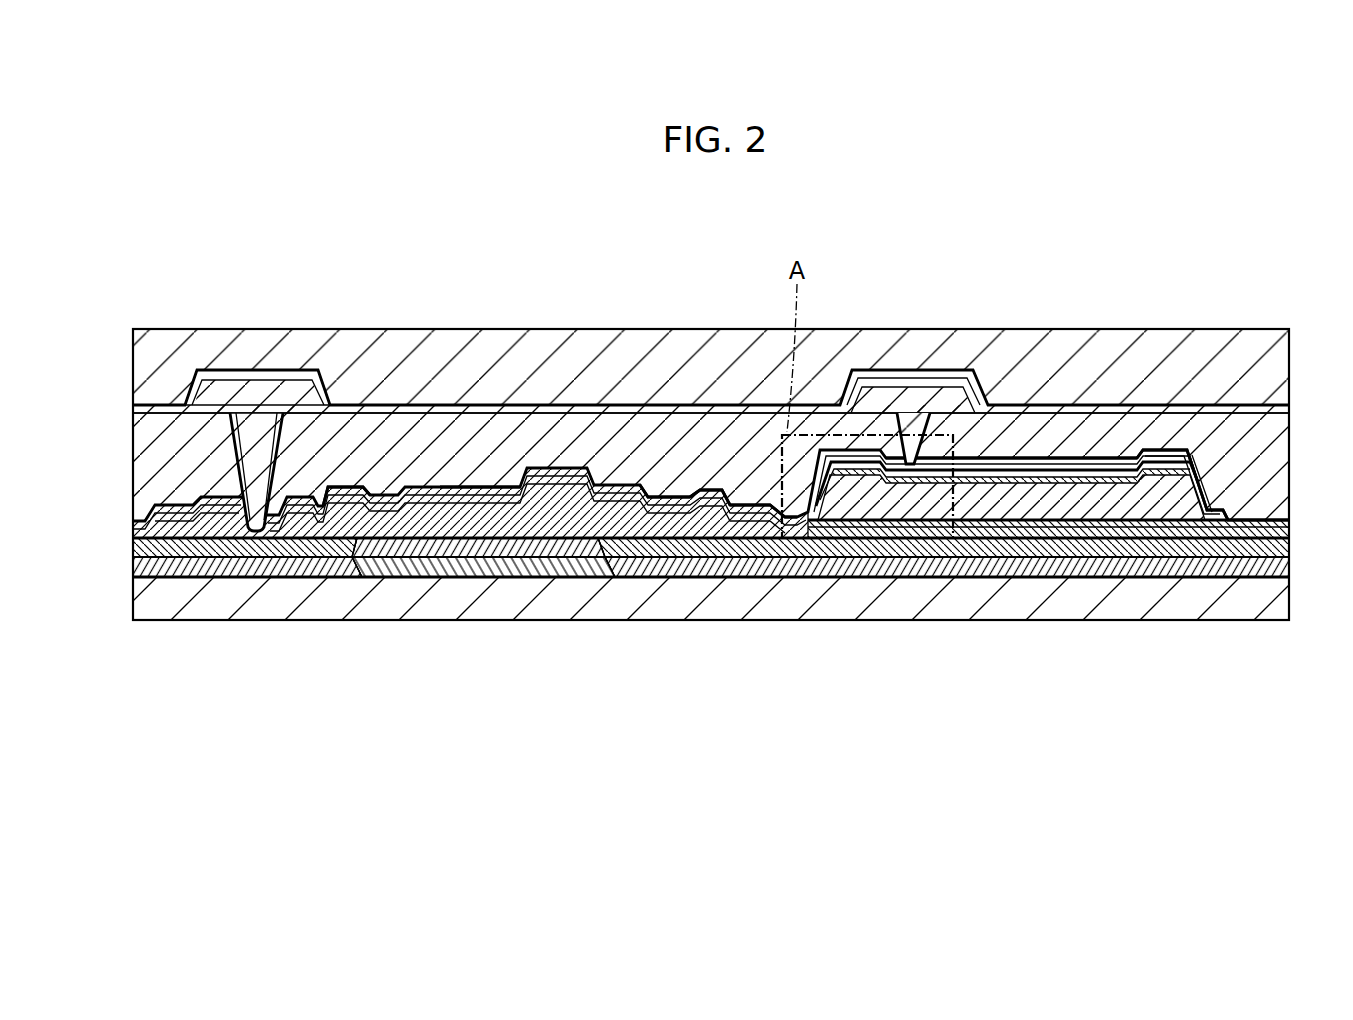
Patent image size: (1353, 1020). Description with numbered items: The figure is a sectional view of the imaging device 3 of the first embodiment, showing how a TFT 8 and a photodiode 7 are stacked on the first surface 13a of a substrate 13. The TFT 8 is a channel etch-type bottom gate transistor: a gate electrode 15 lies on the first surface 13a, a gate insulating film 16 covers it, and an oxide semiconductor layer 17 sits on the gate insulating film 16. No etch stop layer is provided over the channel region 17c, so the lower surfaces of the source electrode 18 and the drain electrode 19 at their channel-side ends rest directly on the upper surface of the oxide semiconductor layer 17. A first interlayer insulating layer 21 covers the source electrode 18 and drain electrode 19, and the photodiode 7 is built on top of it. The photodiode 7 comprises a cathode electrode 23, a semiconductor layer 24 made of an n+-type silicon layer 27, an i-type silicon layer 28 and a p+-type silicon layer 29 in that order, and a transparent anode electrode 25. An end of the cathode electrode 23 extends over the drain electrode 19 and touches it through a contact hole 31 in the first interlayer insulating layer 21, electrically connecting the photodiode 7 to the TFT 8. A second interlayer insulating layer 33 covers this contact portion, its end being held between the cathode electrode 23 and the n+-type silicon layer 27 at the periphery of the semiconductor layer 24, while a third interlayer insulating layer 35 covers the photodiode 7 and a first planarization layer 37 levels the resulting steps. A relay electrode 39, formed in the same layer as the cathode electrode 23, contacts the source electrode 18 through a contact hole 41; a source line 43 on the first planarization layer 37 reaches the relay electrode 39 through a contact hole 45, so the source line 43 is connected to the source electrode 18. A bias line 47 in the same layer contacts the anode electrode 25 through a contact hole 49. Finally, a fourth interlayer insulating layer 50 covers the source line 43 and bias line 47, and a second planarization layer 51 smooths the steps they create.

The display device 3 is at (699, 312).
The photodiode 7 is at (676, 623).
The TFT 8 is at (593, 593).
The substrate 13 is at (1240, 610).
The first surface 13a is at (1292, 575).
The gate electrode 15 is at (437, 560).
The gate insulating film 16 is at (190, 567).
The oxide semiconductor layer 17 is at (520, 555).
The channel region 17c is at (478, 517).
The source electrode 18 is at (298, 547).
The drain electrode 19 is at (668, 540).
The first interlayer insulating layer 21 is at (145, 552).
The cathode electrode 23 is at (770, 538).
The semiconductor layer 24 is at (1048, 605).
The anode electrode 25 is at (1090, 467).
The n+-type silicon layer 27 is at (905, 553).
The i-type silicon layer 28 is at (968, 540).
The p+-type silicon layer 29 is at (1008, 500).
The contact hole 31 is at (712, 548).
The second interlayer insulating layer 33 is at (672, 517).
The third interlayer insulating layer 35 is at (1160, 453).
The first planarization layer 37 is at (150, 445).
The relay electrode 39 is at (293, 517).
The contact hole 41 is at (248, 530).
The source line 43 is at (217, 393).
The contact hole 45 is at (260, 450).
The bias line 47 is at (937, 387).
The contact hole 49 is at (900, 417).
The fourth interlayer insulating layer 50 is at (1025, 408).
The second planarization layer 51 is at (145, 358).